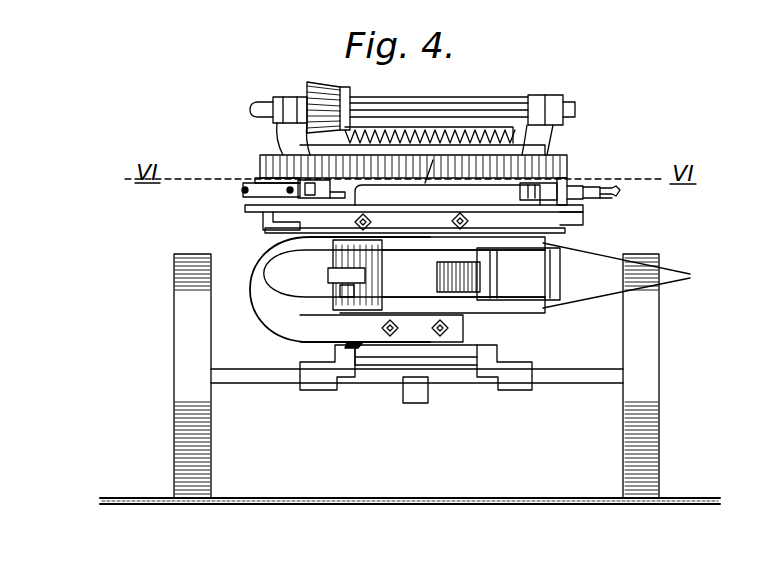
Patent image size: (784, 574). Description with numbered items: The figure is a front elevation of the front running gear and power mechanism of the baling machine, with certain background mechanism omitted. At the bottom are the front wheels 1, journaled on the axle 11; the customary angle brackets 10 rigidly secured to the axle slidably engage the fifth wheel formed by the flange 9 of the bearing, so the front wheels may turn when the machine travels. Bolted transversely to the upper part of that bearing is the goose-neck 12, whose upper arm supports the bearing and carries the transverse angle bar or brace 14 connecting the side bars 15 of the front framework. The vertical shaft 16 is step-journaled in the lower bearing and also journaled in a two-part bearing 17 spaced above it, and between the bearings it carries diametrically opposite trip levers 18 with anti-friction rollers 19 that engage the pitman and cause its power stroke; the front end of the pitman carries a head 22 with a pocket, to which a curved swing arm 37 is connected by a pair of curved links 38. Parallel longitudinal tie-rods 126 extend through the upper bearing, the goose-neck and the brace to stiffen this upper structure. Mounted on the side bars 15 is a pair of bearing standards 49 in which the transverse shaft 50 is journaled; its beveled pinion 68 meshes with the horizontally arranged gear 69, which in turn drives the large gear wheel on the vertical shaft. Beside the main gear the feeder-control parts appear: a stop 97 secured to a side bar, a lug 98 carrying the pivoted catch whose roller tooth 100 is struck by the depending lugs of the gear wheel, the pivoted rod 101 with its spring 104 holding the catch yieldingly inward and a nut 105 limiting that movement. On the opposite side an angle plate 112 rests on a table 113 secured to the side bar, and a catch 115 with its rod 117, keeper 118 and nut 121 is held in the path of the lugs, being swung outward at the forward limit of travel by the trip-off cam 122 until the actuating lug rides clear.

The front wheels 1 is at (173, 313).
The flange 9 is at (370, 365).
The angle brackets 10 is at (313, 390).
The axle 11 is at (250, 383).
The goose-neck 12 is at (270, 318).
The transverse angle bar or brace 14 is at (300, 220).
The side bars 15 is at (260, 210).
The vertical shaft 16 is at (423, 308).
The two-part bearing 17 is at (470, 192).
The trip levers 18 is at (422, 289).
The anti-friction rollers 19 is at (290, 302).
The head 22 is at (550, 275).
The curved swing arm 37 is at (313, 273).
The curved links 38 is at (633, 275).
The bearing standards 49 is at (280, 94).
The transverse shaft 50 is at (262, 100).
The beveled pinion 68 is at (312, 80).
The horizontally arranged gear 69 is at (455, 130).
The stop 97 is at (575, 180).
The lug 98 is at (565, 180).
The roller tooth 100 is at (520, 192).
The pivoted rod 101 is at (613, 190).
The spring 104 is at (600, 186).
The nut 105 is at (610, 199).
The angle plate 112 is at (332, 275).
The table 113 is at (298, 197).
The catch 115 is at (257, 177).
The rod 117 is at (242, 192).
The keeper 118 is at (255, 190).
The nut 121 is at (258, 181).
The trip-off cam 122 is at (345, 172).
The longitudinal tie-rods 126 is at (372, 222).